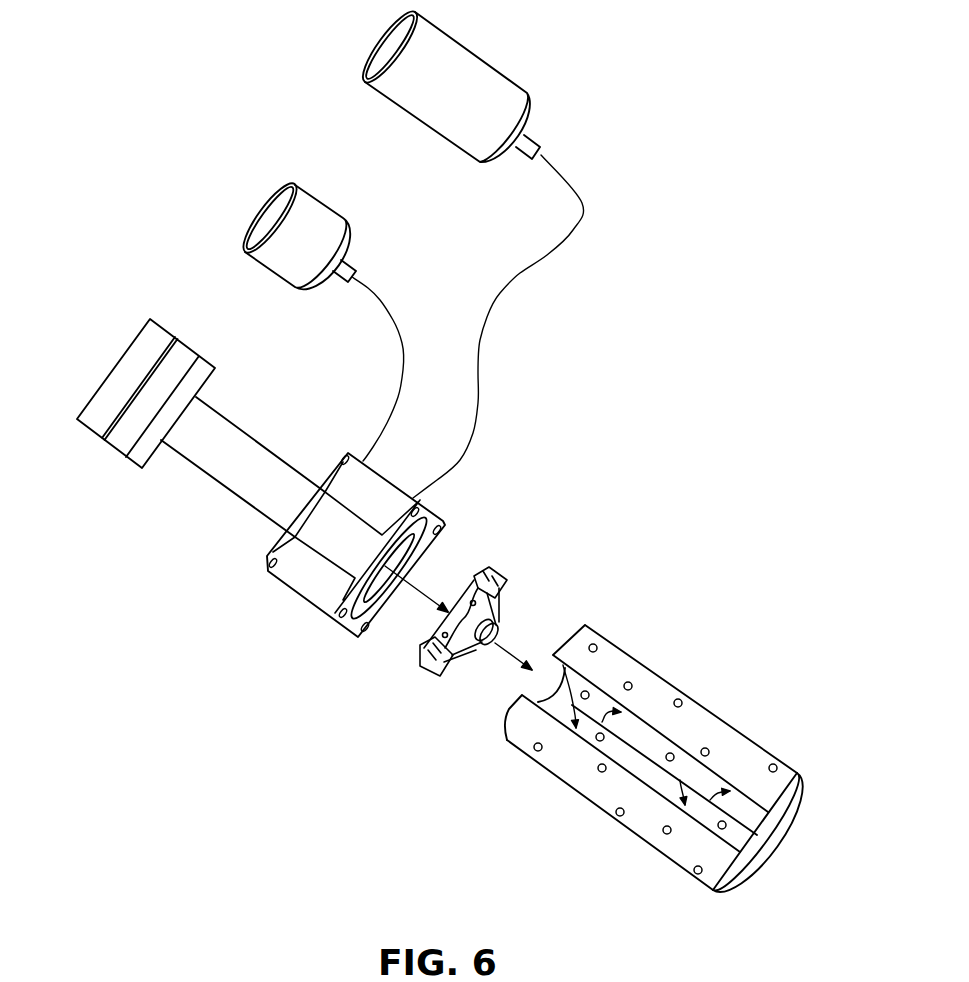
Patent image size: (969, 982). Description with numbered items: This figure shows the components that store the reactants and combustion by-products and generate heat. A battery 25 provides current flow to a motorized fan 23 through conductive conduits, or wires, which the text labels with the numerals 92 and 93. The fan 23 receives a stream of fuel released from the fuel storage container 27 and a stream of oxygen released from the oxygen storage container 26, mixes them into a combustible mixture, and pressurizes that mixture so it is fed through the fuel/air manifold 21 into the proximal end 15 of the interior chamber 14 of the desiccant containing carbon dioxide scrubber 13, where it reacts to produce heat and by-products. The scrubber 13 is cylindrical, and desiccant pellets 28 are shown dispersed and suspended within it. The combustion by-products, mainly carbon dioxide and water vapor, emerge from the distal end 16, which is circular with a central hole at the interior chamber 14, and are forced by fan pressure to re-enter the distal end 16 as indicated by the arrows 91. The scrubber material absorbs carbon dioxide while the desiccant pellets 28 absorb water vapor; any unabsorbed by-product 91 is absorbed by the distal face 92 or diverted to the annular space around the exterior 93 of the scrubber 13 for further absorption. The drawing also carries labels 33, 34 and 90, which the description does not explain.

The desiccant containing carbon dioxide scrubber 13 is at (686, 772).
The interior chamber 14 is at (622, 779).
The proximal end 15 is at (711, 715).
The distal end 16 is at (743, 817).
The fuel/air manifold 21 is at (489, 639).
The motorized fan 23 is at (283, 575).
The battery 25 is at (78, 423).
The oxygen storage container 26 is at (386, 96).
The fuel storage container 27 is at (267, 265).
The desiccant pellets 28 is at (783, 765).
The rod 33 is at (207, 474).
The rod 34 is at (267, 443).
The hub 90 is at (507, 653).
The arrows 91 is at (602, 722).
The distal face 92 is at (727, 870).
The exterior 93 is at (625, 830).